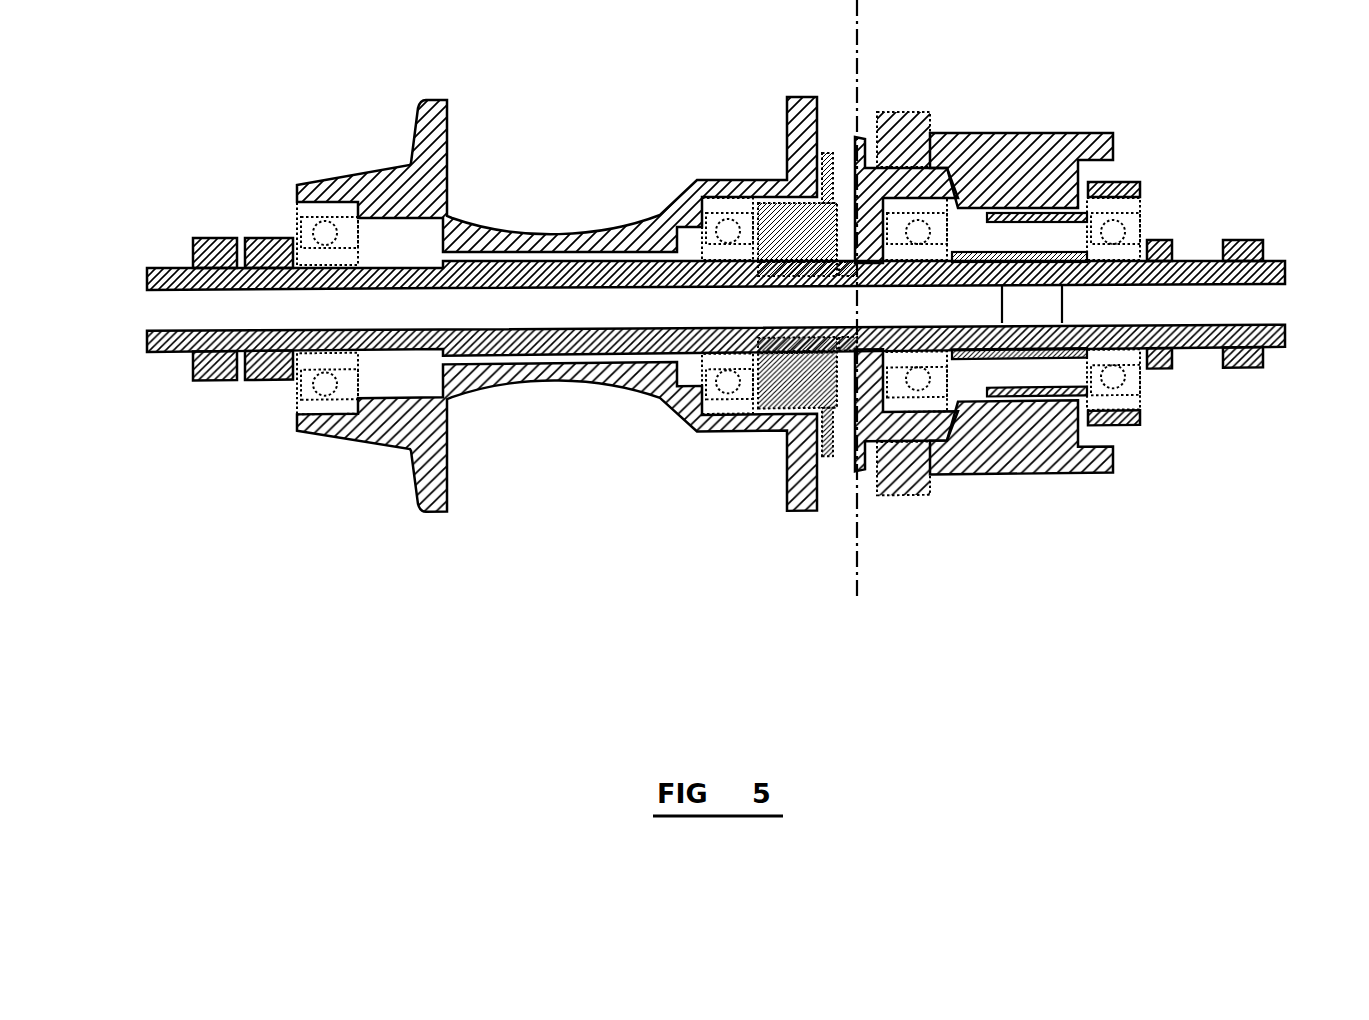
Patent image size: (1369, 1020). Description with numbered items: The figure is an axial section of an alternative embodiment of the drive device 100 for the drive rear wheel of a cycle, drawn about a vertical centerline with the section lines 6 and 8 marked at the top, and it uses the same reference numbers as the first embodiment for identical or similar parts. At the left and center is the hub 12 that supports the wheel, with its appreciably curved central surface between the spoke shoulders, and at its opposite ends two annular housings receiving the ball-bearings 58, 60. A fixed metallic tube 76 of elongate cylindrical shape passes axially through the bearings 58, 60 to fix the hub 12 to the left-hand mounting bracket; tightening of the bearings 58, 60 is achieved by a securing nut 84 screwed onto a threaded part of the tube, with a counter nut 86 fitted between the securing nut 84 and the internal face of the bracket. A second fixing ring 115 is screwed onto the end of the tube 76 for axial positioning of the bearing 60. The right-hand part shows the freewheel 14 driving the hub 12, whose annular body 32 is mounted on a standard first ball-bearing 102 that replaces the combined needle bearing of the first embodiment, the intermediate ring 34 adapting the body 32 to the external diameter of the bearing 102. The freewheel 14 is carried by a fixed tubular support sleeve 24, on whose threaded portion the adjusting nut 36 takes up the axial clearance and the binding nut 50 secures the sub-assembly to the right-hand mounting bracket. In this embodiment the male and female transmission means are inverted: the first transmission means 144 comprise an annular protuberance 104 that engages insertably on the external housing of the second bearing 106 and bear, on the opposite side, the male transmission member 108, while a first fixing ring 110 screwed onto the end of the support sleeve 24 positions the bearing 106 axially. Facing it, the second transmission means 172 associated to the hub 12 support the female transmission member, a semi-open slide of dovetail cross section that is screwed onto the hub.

The section line 6 is at (866, 27).
The section line 8 is at (782, 27).
The hub 12 is at (488, 223).
The freewheel 14 is at (1055, 319).
The support sleeve 24 is at (749, 350).
The annular body 32 is at (1046, 287).
The intermediate ring 34 is at (1171, 299).
The adjusting nut 36 is at (1163, 363).
The binding nut 50 is at (1245, 245).
The ball-bearing 58 is at (313, 224).
The ball-bearing 60 is at (721, 400).
The fixed metallic tube 76 is at (590, 348).
The securing nut 84 is at (276, 362).
The counter nut 86 is at (218, 362).
The drive device 100 is at (749, 343).
The first ball-bearing 102 is at (1143, 398).
The annular protuberance 104 is at (912, 433).
The second bearing 106 is at (1105, 117).
The male transmission member 108 is at (847, 250).
The first fixing ring 110 is at (846, 268).
The second fixing ring 115 is at (795, 270).
The first transmission means 144 is at (922, 217).
The second transmission means 172 is at (805, 235).